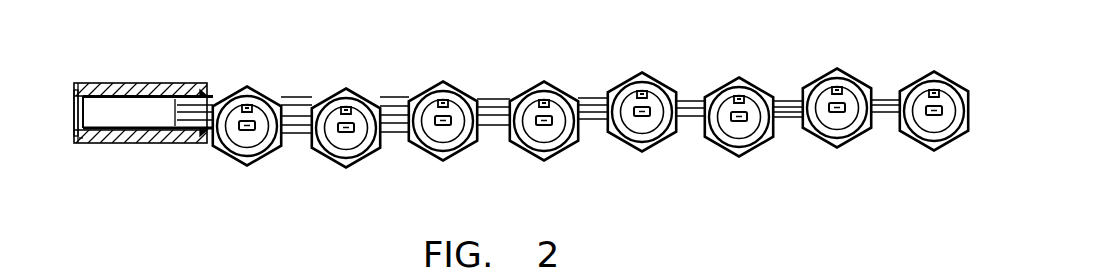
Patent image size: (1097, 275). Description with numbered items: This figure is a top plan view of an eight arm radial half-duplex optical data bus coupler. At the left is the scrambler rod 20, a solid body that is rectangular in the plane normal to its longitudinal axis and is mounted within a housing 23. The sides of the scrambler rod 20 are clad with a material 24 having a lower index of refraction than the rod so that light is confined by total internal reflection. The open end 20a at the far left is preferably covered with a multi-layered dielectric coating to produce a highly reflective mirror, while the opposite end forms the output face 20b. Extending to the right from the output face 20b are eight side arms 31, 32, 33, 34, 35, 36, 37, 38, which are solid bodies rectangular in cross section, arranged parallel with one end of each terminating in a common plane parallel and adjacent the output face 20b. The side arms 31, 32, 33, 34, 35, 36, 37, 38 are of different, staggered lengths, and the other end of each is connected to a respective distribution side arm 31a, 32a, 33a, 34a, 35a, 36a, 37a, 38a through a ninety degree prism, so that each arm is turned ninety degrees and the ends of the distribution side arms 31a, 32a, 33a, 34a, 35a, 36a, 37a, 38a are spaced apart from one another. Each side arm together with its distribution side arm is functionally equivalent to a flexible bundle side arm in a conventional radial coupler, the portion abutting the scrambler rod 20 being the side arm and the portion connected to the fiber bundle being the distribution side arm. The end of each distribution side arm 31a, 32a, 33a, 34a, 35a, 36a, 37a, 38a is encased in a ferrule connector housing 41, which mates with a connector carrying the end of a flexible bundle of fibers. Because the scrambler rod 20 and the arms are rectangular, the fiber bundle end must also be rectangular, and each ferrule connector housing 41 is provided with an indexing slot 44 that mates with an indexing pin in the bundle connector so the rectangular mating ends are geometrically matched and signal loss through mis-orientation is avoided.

The scrambler rod 20 is at (155, 107).
The open end 20a is at (84, 97).
The output face 20b is at (180, 129).
The housing 23 is at (132, 83).
The cladding material 24 is at (97, 143).
The side arm 31 is at (212, 148).
The side arm 32 is at (297, 134).
The side arm 33 is at (397, 133).
The side arm 34 is at (495, 126).
The side arm 35 is at (594, 120).
The side arm 36 is at (690, 117).
The side arm 37 is at (788, 118).
The side arm 38 is at (886, 113).
The distribution side arm 31a is at (249, 131).
The distribution side arm 32a is at (348, 133).
The distribution side arm 33a is at (445, 126).
The distribution side arm 34a is at (546, 126).
The distribution side arm 35a is at (644, 117).
The distribution side arm 36a is at (741, 122).
The distribution side arm 37a is at (839, 113).
The distribution side arm 38a is at (936, 116).
The ferrule connector housing 41 is at (246, 92).
The indexing slot 44 is at (243, 106).